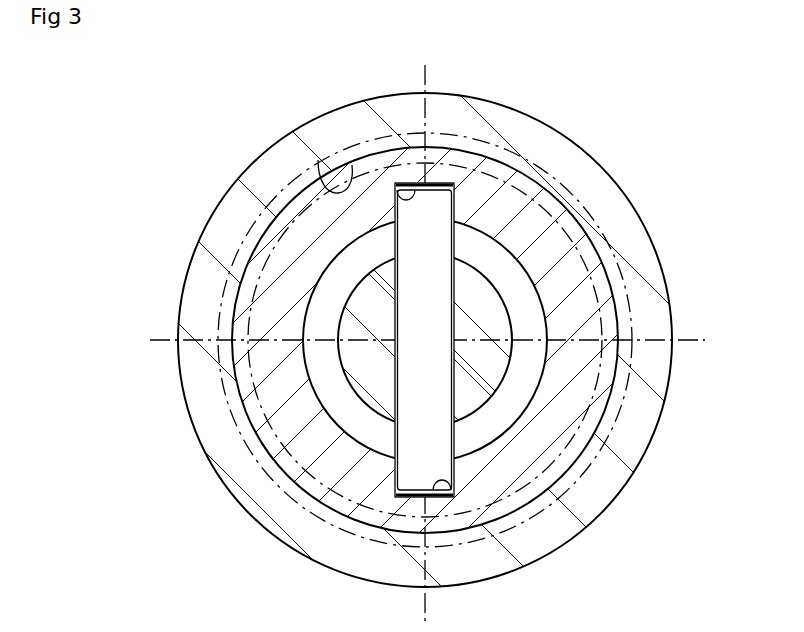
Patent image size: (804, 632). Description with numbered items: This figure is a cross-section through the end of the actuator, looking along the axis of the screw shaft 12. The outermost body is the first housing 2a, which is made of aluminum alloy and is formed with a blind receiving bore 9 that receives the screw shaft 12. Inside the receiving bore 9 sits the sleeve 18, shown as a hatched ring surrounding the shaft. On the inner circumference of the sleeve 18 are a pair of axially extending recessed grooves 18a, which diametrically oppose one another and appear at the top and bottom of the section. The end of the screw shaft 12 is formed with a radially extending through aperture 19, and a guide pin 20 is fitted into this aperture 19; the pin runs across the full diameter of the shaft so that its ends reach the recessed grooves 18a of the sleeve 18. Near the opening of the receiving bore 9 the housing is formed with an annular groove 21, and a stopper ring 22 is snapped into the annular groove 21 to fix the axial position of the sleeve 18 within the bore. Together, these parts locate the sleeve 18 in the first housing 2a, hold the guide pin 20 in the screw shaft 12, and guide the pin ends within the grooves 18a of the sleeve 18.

The first housing 2a is at (533, 136).
The receiving bore 9 is at (328, 172).
The screw shaft 12 is at (377, 366).
The sleeve 18 is at (560, 237).
The recessed grooves 18a is at (403, 191).
The through aperture 19 is at (346, 340).
The guide pin 20 is at (410, 283).
The annular groove 21 is at (578, 401).
The stopper ring 22 is at (674, 308).